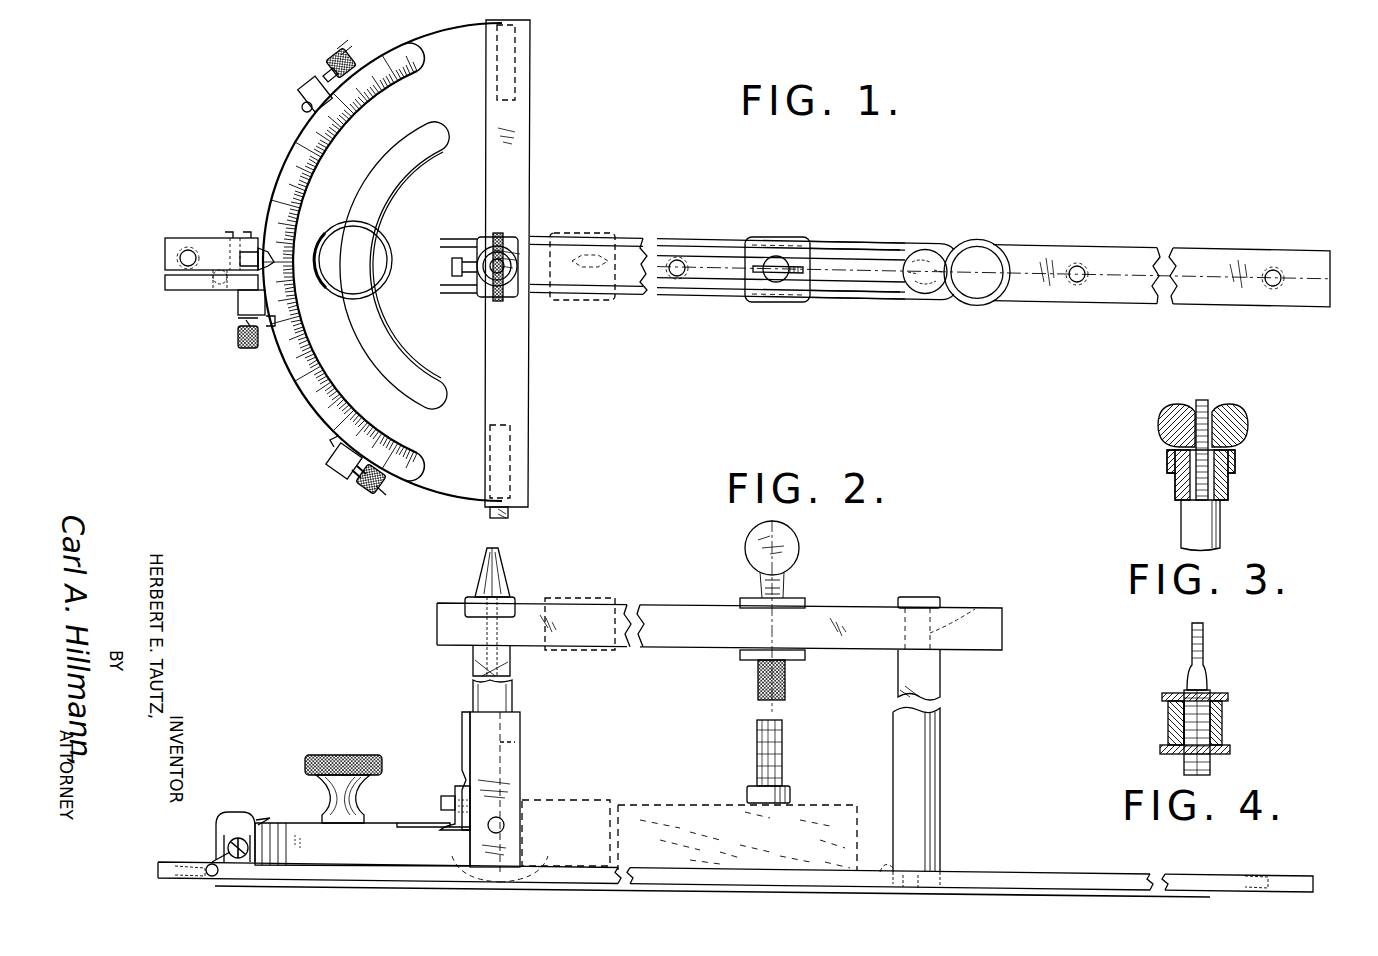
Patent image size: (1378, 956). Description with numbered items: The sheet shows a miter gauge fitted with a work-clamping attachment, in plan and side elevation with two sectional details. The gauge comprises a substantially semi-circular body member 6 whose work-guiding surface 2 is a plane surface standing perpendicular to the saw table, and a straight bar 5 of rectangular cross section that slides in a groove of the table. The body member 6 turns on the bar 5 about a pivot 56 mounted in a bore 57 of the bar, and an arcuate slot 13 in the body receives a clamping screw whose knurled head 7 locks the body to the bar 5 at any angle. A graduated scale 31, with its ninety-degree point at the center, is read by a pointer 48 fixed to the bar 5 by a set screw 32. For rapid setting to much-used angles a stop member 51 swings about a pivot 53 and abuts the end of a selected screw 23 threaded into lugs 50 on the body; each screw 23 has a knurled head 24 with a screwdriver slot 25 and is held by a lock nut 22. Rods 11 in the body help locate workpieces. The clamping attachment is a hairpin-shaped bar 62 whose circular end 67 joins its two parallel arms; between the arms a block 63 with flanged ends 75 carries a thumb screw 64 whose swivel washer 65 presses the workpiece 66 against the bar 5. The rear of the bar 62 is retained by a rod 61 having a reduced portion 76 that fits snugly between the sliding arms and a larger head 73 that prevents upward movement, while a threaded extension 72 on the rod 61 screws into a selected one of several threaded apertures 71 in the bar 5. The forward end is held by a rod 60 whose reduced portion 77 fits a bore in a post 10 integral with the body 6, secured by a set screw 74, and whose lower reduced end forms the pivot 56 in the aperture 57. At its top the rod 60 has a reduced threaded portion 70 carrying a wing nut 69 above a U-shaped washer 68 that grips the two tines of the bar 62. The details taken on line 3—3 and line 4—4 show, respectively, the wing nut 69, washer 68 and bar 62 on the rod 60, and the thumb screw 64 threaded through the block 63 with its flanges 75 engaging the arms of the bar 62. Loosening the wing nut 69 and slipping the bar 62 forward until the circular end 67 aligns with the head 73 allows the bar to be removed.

In FIG. 1, the work-guiding surface 2 is at (530, 398).
In FIG. 2, the work-guiding surface 2 is at (522, 793).
In FIG. 2, the section line 3— 3 is at (494, 535).
In FIG. 2, the section line 4— 4 is at (775, 527).
In FIG. 1, the bar 5 is at (147, 272).
In FIG. 2, the bar 5 is at (1198, 880).
In FIG. 1, the body member 6 is at (466, 500).
In FIG. 2, the body member 6 is at (360, 840).
In FIG. 1, the knurled head 7 is at (373, 251).
In FIG. 2, the knurled head 7 is at (355, 766).
In FIG. 2, the lug or post 10 is at (465, 726).
In FIG. 1, the rods 11 is at (515, 50).
In FIG. 2, the rods 11 is at (505, 826).
In FIG. 1, the arcuate slot 13 is at (404, 164).
In FIG. 1, the lock nut 22 is at (322, 78).
In FIG. 1, the screws 23 is at (303, 110).
In FIG. 1, the knurled head 24 is at (333, 60).
In FIG. 1, the slot 25 is at (345, 61).
In FIG. 1, the graduated scale 31 is at (313, 412).
In FIG. 1, the set screw 32 is at (230, 236).
In FIG. 1, the pointer 48 is at (258, 250).
In FIG. 2, the pointer 48 is at (258, 822).
In FIG. 1, the lugs 50 is at (305, 93).
In FIG. 1, the stop member 51 is at (214, 284).
In FIG. 2, the stop member 51 is at (210, 866).
In FIG. 1, the pivot 53 is at (220, 286).
In FIG. 2, the pivot 56 is at (526, 872).
In FIG. 2, the bore 57 is at (460, 868).
In FIG. 2, the rod 60 is at (477, 665).
In FIG. 3, the rod 60 is at (1220, 526).
In FIG. 2, the rear stud or rod 61 is at (930, 806).
In FIG. 1, the bar or strap 62 is at (847, 292).
In FIG. 2, the bar or strap 62 is at (692, 620).
In FIG. 3, the bar or strap 62 is at (1230, 491).
In FIG. 4, the bar or strap 62 is at (1168, 711).
In FIG. 4, the block 63 is at (1176, 721).
In FIG. 1, the clamping screw 64 is at (772, 274).
In FIG. 2, the clamping screw 64 is at (748, 551).
In FIG. 4, the clamping screw 64 is at (1204, 652).
In FIG. 2, the swivel head or washer 65 is at (790, 795).
In FIG. 2, the workpiece 66 is at (665, 813).
In FIG. 1, the circular end 67 is at (1000, 257).
In FIG. 1, the U-shaped washer 68 is at (512, 249).
In FIG. 2, the U-shaped washer 68 is at (468, 601).
In FIG. 3, the U-shaped washer 68 is at (1236, 468).
In FIG. 1, the wing nut 69 is at (490, 241).
In FIG. 2, the wing nut 69 is at (508, 580).
In FIG. 3, the wing nut 69 is at (1238, 420).
In FIG. 3, the reduced threaded portion 70 is at (1204, 404).
In FIG. 1, the threaded apertures 71 is at (188, 250).
In FIG. 2, the threaded apertures 71 is at (175, 866).
In FIG. 2, the threaded extension 72 is at (892, 872).
In FIG. 1, the head 73 is at (923, 293).
In FIG. 2, the head 73 is at (920, 606).
In FIG. 1, the set screw 74 is at (452, 268).
In FIG. 2, the set screw 74 is at (443, 802).
In FIG. 1, the flanged ends 75 is at (768, 245).
In FIG. 2, the flanged ends 75 is at (798, 609).
In FIG. 4, the flanged ends 75 is at (1228, 699).
In FIG. 2, the reduced portion 76 is at (959, 610).
In FIG. 2, the portion of reduced diameter 77 is at (516, 743).